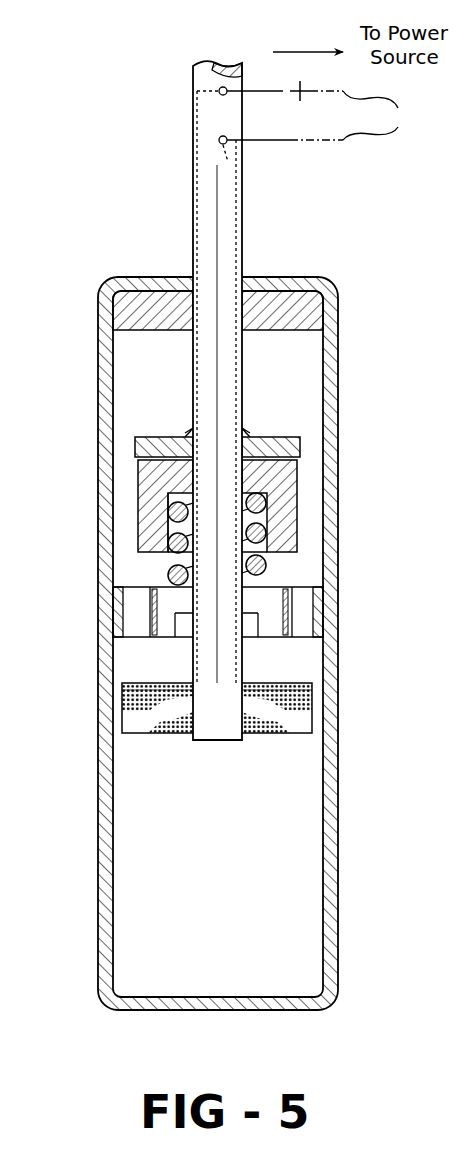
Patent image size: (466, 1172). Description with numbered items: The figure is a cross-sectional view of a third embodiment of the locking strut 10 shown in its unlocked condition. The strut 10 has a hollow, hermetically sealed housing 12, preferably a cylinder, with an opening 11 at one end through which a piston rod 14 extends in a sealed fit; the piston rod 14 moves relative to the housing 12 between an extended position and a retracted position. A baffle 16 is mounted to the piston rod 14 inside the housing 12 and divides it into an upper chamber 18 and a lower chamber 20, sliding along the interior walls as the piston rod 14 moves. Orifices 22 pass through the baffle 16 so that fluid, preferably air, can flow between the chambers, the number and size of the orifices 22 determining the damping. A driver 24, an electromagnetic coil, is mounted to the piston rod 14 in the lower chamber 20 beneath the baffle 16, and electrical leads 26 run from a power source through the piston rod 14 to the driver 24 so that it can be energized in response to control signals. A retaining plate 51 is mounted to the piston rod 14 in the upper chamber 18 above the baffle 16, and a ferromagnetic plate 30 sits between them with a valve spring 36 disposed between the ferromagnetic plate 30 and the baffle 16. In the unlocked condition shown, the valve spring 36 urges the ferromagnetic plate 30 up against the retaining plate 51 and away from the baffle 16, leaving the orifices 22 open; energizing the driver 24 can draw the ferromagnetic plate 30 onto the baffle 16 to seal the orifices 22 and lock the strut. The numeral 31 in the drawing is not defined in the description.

The locking strut 10 is at (93, 186).
The opening 11 is at (245, 298).
The housing 12 is at (98, 430).
The piston rod 14 is at (208, 213).
The baffle 16 is at (305, 620).
The upper chamber 18 is at (136, 358).
The lower chamber 20 is at (156, 925).
The orifice 22 is at (290, 607).
The driver 24 is at (300, 710).
The electrical leads 26 is at (306, 121).
The ferromagnetic plate 30 is at (290, 478).
The spring housing wall 31 is at (143, 517).
The valve spring 36 is at (258, 533).
The retaining plate 51 is at (302, 450).